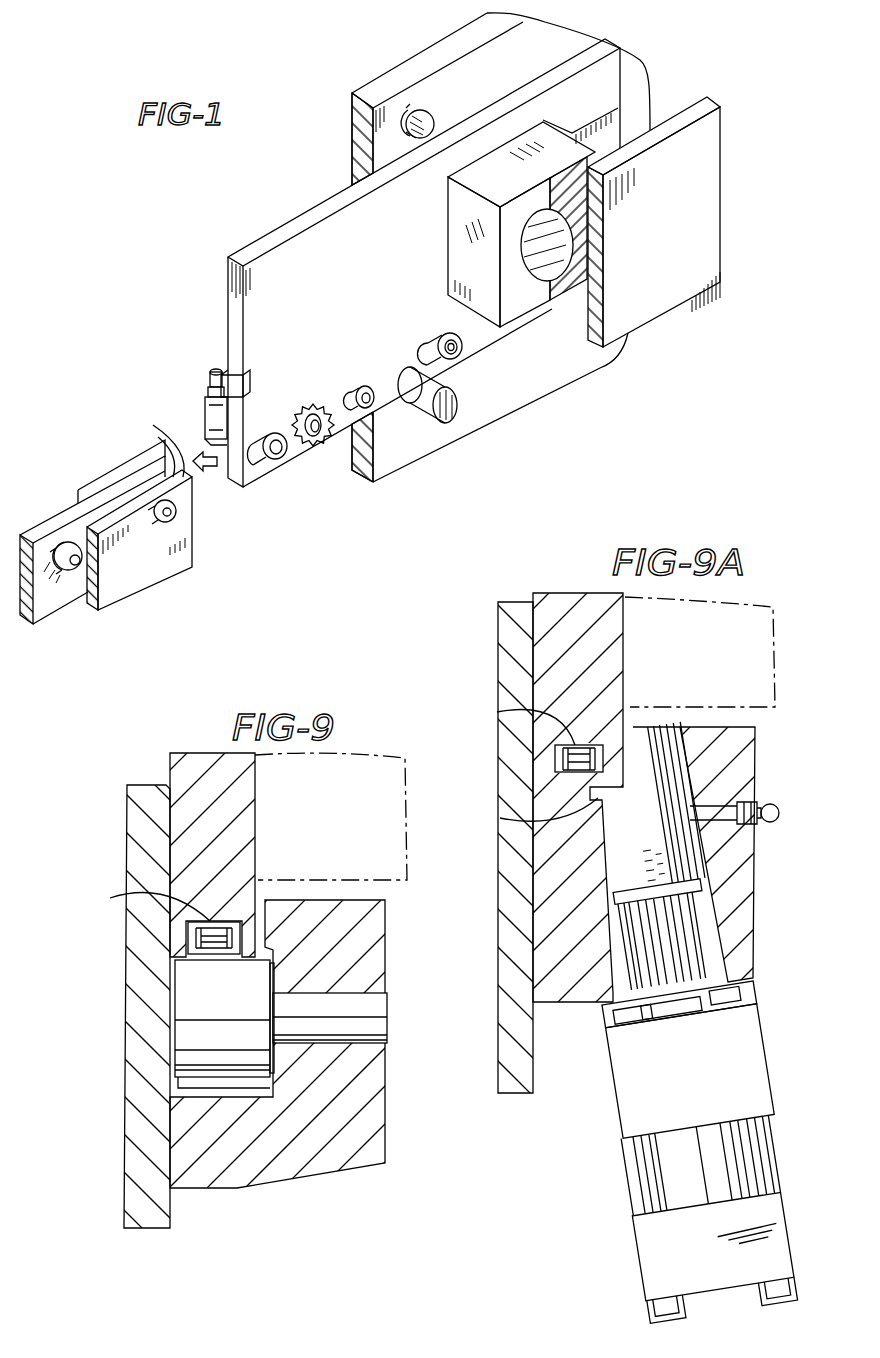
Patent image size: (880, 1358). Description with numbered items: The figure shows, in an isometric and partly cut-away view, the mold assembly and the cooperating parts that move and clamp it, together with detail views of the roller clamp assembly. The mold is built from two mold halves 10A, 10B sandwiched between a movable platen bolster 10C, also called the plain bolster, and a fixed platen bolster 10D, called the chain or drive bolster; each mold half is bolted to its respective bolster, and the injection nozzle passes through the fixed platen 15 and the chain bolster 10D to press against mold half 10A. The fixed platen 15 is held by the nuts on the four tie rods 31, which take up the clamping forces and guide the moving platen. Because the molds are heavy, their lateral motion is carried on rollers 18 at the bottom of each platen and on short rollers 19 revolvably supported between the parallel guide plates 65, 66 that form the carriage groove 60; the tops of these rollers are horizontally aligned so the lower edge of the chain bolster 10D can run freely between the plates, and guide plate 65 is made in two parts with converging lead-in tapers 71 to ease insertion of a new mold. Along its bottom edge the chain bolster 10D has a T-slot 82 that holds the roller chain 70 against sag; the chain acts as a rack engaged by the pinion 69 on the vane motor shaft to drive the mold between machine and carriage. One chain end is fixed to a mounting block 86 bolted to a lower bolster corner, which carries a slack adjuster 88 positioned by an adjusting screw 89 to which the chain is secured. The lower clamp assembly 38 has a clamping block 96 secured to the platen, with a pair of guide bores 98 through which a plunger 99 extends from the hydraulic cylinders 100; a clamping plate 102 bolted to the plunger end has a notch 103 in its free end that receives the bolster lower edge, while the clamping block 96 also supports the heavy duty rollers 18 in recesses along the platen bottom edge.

In FIG. 1, the mold half 10A is at (510, 150).
In FIG. 9, the mold half 10A is at (332, 799).
In FIG. 9A, the mold half 10A is at (722, 658).
In FIG. 1, the mold half 10B is at (578, 170).
In FIG. 1, the movable platen bolster 10C is at (676, 148).
In FIG. 1, the fixed platen bolster 10D is at (312, 220).
In FIG. 9, the fixed platen bolster 10D is at (203, 760).
In FIG. 9A, the fixed platen bolster 10D is at (576, 597).
In FIG. 1, the fixed platen 15 is at (352, 141).
In FIG. 9, the fixed platen 15 is at (128, 826).
In FIG. 9A, the fixed platen 15 is at (503, 653).
In FIG. 1, the rollers 18 is at (273, 432).
In FIG. 9, the rollers 18 is at (223, 1014).
In FIG. 1, the short rollers 19 is at (157, 500).
In FIG. 1, the tie rods 31 is at (410, 110).
In FIG. 9, the lower clamp assembly 38 is at (394, 1085).
In FIG. 9A, the lower clamp assembly 38 is at (773, 978).
In FIG. 1, the carriage groove 60 is at (132, 478).
In FIG. 1, the guide plate 65 is at (43, 527).
In FIG. 1, the guide plate 66 is at (145, 578).
In FIG. 1, the pinion 69 is at (313, 447).
In FIG. 9, the roller chain 70 is at (180, 940).
In FIG. 9A, the roller chain 70 is at (545, 758).
In FIG. 1, the lead-in tapers 71 is at (154, 438).
In FIG. 9, the T-slot 82 is at (143, 901).
In FIG. 9A, the T-slot 82 is at (520, 722).
In FIG. 1, the mounting block 86 is at (232, 392).
In FIG. 1, the slack adjuster 88 is at (198, 406).
In FIG. 1, the adjusting screw 89 is at (216, 369).
In FIG. 9, the clamping block 96 is at (372, 949).
In FIG. 9A, the clamping block 96 is at (748, 748).
In FIG. 9A, the guide bores 98 is at (698, 925).
In FIG. 9A, the plunger 99 is at (677, 955).
In FIG. 9A, the hydraulic cylinders 100 is at (667, 1156).
In FIG. 9A, the clamping plate 102 is at (700, 853).
In FIG. 9A, the notch 103 is at (525, 810).